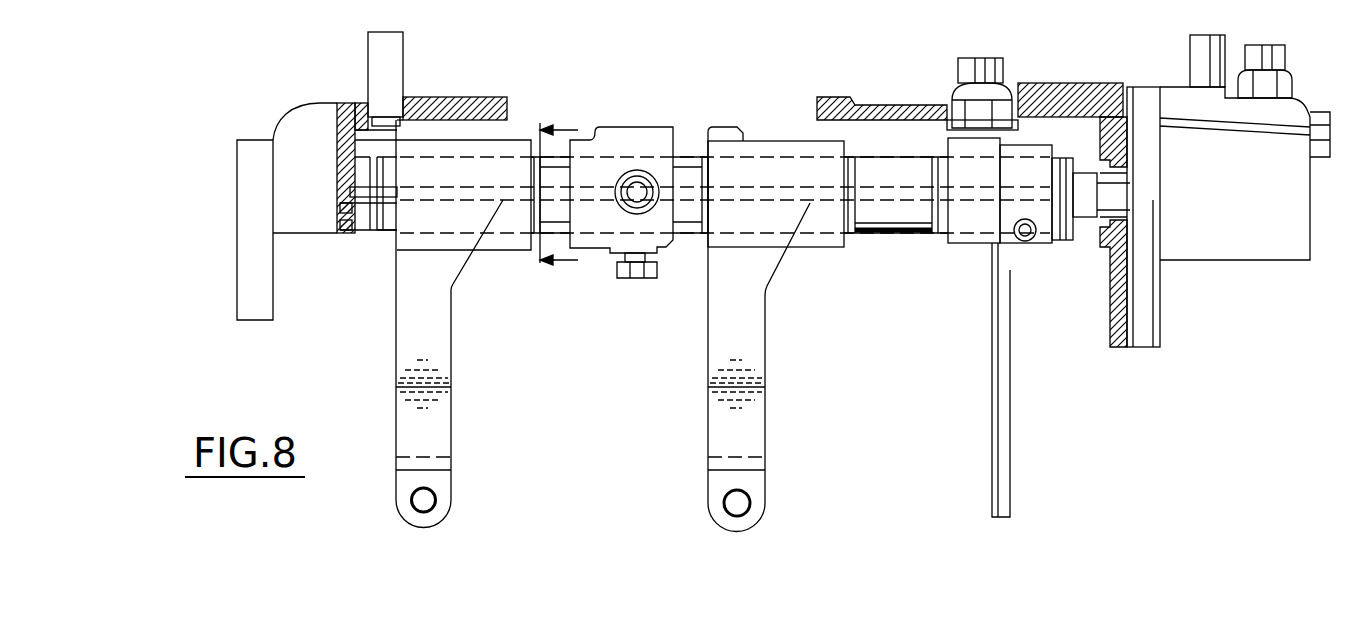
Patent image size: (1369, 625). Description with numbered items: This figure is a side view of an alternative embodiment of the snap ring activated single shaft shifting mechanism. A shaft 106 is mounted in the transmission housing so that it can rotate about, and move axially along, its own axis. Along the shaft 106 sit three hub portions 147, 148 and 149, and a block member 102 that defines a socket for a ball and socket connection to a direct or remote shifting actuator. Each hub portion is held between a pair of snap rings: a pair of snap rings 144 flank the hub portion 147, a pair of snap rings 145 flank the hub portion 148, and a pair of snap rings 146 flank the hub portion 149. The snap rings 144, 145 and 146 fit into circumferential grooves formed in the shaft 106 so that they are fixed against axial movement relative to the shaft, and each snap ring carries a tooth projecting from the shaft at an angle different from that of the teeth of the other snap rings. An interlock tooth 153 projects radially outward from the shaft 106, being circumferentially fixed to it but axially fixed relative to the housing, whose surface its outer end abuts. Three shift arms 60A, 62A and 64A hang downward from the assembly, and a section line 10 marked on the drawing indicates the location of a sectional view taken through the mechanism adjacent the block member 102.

The section line 10- 10 is at (563, 195).
The first lever arm 60A is at (437, 435).
The second lever arm 62A is at (752, 437).
The third lever arm 64A is at (1003, 453).
The block member 102 is at (625, 137).
The shaft 106 is at (1120, 190).
The snap rings 144 is at (375, 228).
The snap rings 145 is at (855, 237).
The snap rings 146 is at (938, 238).
The hub portion 147 is at (462, 148).
The hub portion 148 is at (777, 143).
The hub portion 149 is at (1033, 148).
The interlock tooth 153 is at (368, 188).